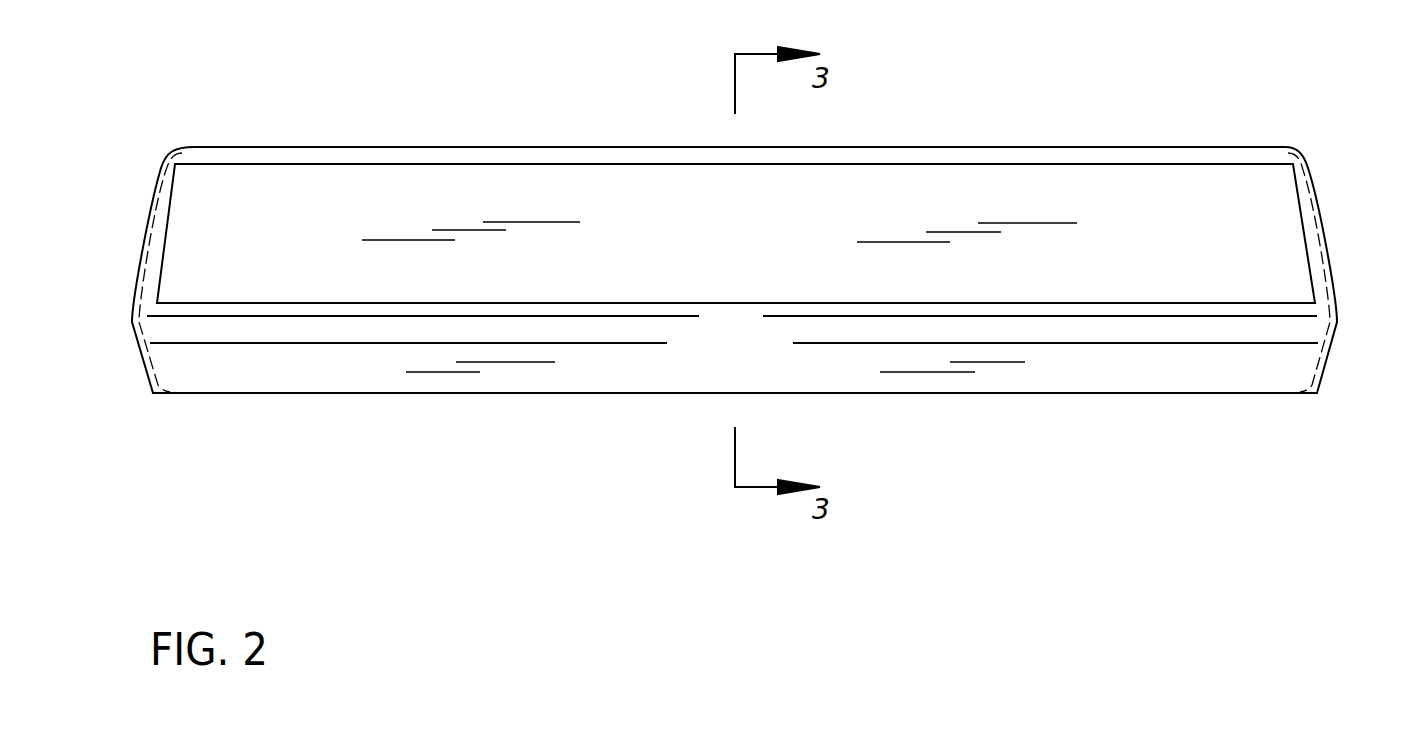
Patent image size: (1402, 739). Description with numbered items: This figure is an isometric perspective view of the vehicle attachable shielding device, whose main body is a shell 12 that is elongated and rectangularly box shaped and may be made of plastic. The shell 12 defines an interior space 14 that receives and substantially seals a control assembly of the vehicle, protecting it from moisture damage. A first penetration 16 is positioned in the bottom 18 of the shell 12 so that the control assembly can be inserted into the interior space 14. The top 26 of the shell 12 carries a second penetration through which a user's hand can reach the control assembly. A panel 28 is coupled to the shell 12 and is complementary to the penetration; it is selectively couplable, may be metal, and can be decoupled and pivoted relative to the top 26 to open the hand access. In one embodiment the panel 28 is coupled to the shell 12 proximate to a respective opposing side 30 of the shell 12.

The shell 12 is at (1325, 183).
The interior space 14 is at (965, 200).
The first penetration 16 is at (632, 410).
The bottom 18 is at (493, 410).
The top 26 is at (456, 192).
The panel 28 is at (567, 192).
The opposing side 30 is at (163, 357).